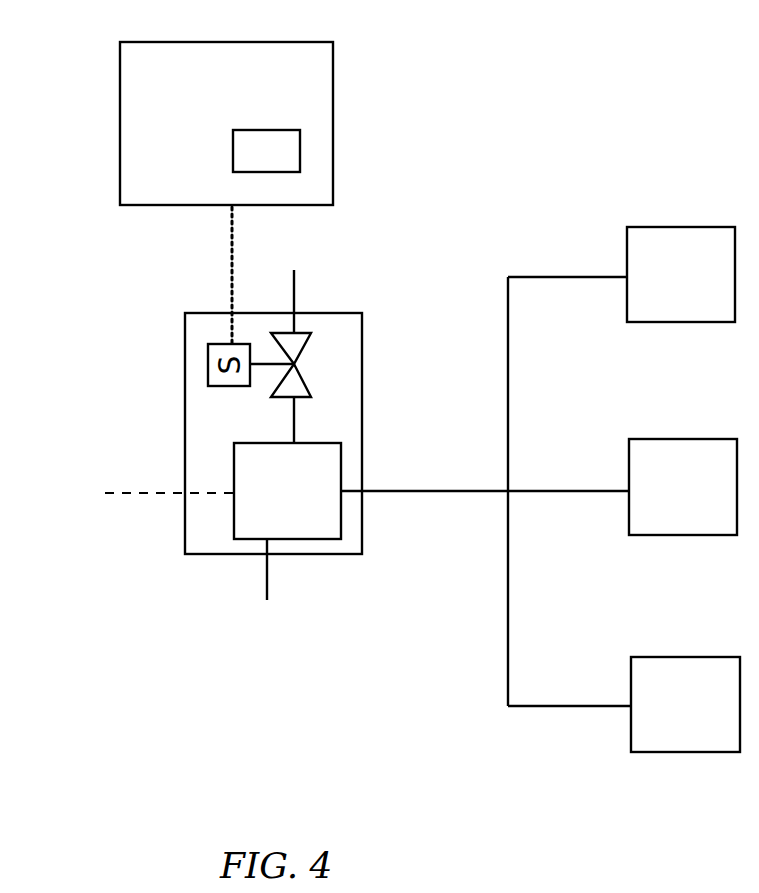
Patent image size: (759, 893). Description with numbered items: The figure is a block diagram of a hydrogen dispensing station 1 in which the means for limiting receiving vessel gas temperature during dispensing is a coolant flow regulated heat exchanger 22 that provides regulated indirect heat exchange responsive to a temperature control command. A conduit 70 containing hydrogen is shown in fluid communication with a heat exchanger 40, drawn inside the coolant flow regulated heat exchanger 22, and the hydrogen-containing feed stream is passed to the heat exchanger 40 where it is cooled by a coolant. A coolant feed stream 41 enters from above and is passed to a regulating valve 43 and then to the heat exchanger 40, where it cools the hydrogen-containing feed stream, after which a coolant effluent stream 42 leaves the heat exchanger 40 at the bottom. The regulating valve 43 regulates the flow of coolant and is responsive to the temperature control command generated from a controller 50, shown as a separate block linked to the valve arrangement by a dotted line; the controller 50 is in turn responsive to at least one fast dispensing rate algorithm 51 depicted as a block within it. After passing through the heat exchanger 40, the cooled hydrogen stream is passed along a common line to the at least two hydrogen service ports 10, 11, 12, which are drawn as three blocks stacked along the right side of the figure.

The hydrogen dispensing station 1 is at (439, 109).
The hydrogen service port 10 is at (699, 289).
The hydrogen service port 11 is at (708, 503).
The hydrogen service port 12 is at (706, 719).
The coolant flow regulated heat exchanger 22 is at (200, 313).
The heat exchanger 40 is at (305, 506).
The coolant feed stream 41 is at (296, 292).
The coolant effluent stream 42 is at (268, 588).
The regulating valve 43 is at (296, 384).
The controller 50 is at (181, 101).
The fast dispensing rate algorithm 51 is at (283, 167).
The conduit 70 is at (172, 492).